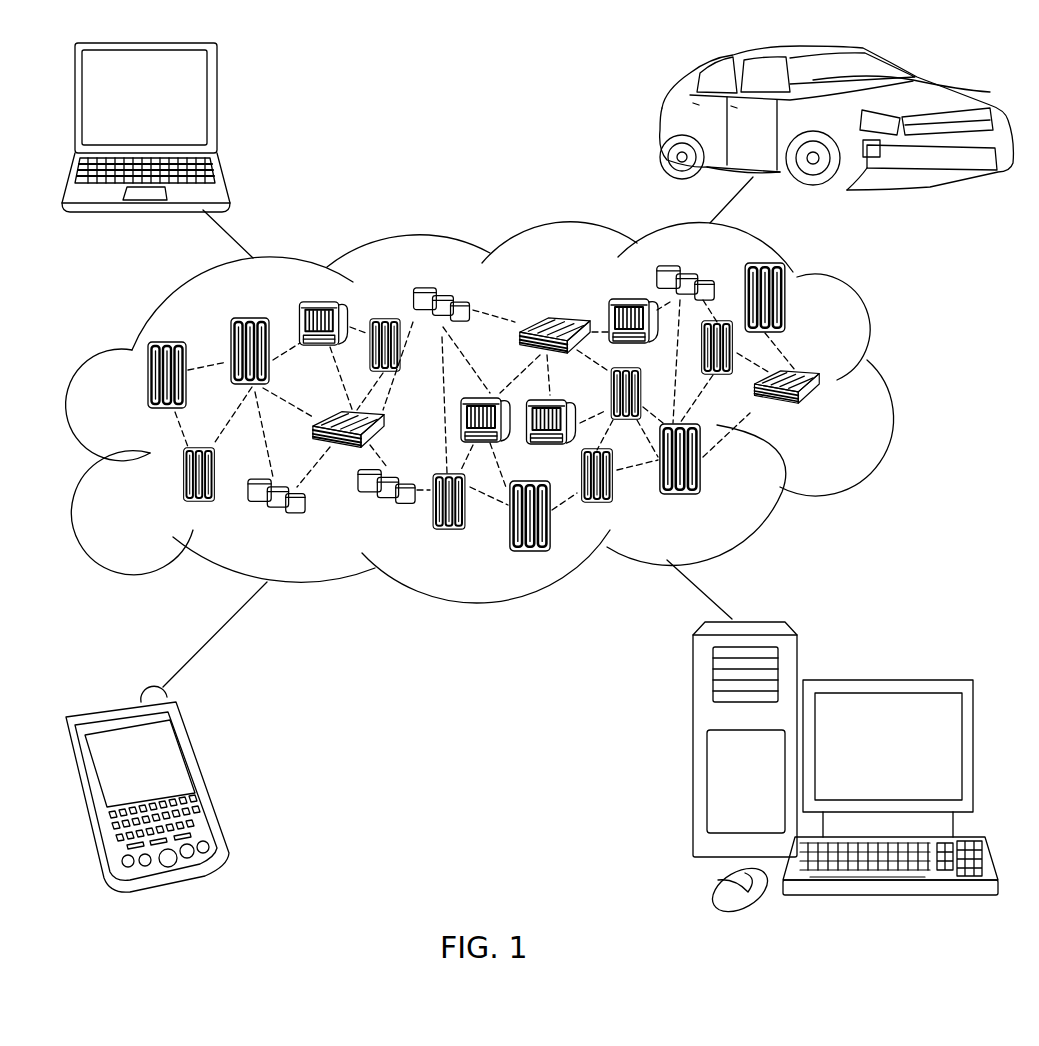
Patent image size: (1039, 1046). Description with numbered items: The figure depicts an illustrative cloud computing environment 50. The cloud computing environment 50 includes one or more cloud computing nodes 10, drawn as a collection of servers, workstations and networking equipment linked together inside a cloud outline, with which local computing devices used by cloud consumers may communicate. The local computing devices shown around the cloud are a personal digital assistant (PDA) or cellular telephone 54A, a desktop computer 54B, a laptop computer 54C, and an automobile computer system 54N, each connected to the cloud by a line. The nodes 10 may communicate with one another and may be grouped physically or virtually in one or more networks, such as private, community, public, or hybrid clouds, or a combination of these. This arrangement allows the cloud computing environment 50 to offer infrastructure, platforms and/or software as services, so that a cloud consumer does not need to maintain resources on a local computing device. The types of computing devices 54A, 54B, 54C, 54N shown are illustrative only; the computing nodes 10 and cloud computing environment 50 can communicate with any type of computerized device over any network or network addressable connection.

The cloud computing nodes 10 is at (832, 417).
The cloud computing environment 50 is at (887, 388).
The personal digital assistant (PDA) or cellular telephone 54A is at (205, 777).
The desktop computer 54B is at (886, 680).
The laptop computer 54C is at (217, 108).
The automobile computer system 54N is at (661, 124).